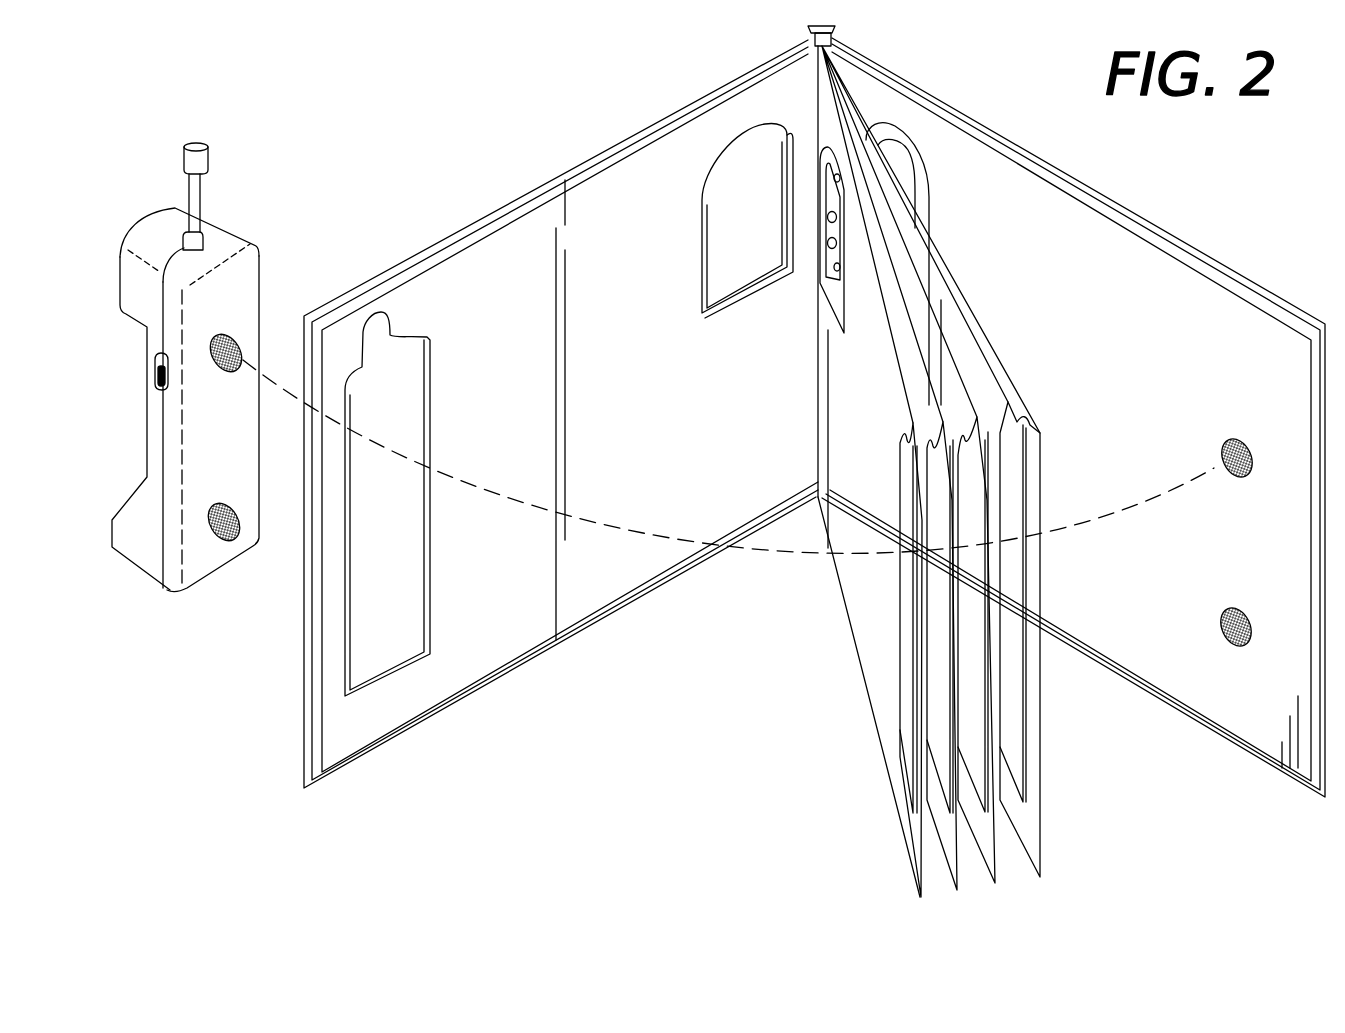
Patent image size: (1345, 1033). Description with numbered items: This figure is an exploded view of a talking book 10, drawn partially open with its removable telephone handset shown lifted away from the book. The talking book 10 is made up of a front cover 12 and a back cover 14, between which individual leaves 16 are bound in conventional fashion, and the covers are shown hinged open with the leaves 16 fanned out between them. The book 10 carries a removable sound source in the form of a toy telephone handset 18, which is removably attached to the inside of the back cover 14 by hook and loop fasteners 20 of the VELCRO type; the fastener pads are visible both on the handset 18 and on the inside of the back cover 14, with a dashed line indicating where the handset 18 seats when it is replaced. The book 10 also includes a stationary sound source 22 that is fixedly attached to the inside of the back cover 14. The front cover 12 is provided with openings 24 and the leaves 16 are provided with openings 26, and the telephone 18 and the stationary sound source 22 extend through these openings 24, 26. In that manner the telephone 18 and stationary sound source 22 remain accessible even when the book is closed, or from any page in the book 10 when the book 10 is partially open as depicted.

The talking book 10 is at (678, 97).
The front cover 12 is at (473, 220).
The back cover 14 is at (1168, 232).
The leaves 16 is at (1000, 866).
The toy telephone handset 18 is at (143, 558).
The hook and loop fasteners 20 is at (220, 542).
The stationary sound source 22 is at (930, 192).
The openings 24 is at (381, 658).
The openings 26 is at (820, 283).